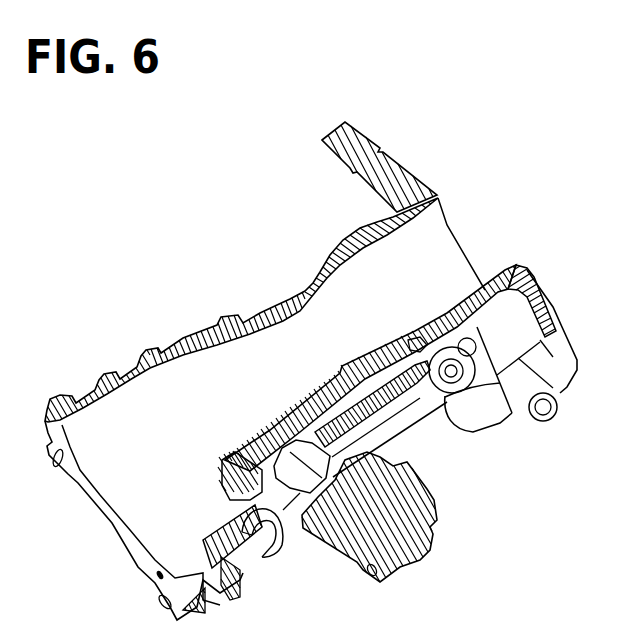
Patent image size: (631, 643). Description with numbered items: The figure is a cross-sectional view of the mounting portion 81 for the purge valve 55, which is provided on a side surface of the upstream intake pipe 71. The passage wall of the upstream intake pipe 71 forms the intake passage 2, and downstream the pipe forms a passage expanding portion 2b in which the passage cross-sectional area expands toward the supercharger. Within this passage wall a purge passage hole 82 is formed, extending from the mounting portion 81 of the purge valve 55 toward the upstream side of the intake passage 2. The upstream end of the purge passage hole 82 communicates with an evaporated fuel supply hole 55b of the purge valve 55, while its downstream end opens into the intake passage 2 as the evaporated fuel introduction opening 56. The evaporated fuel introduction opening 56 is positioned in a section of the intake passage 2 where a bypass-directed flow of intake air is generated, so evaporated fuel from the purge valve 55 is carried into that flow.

The intake passage 2 is at (368, 317).
The passage expanding portion 2b is at (120, 487).
The purge valve 55 is at (440, 503).
The evaporated fuel supply hole 55b is at (275, 432).
The evaporated fuel introduction opening 56 is at (473, 330).
The upstream intake pipe 71 is at (417, 420).
The mounting portion 81 is at (296, 515).
The purge passage hole 82 is at (332, 440).